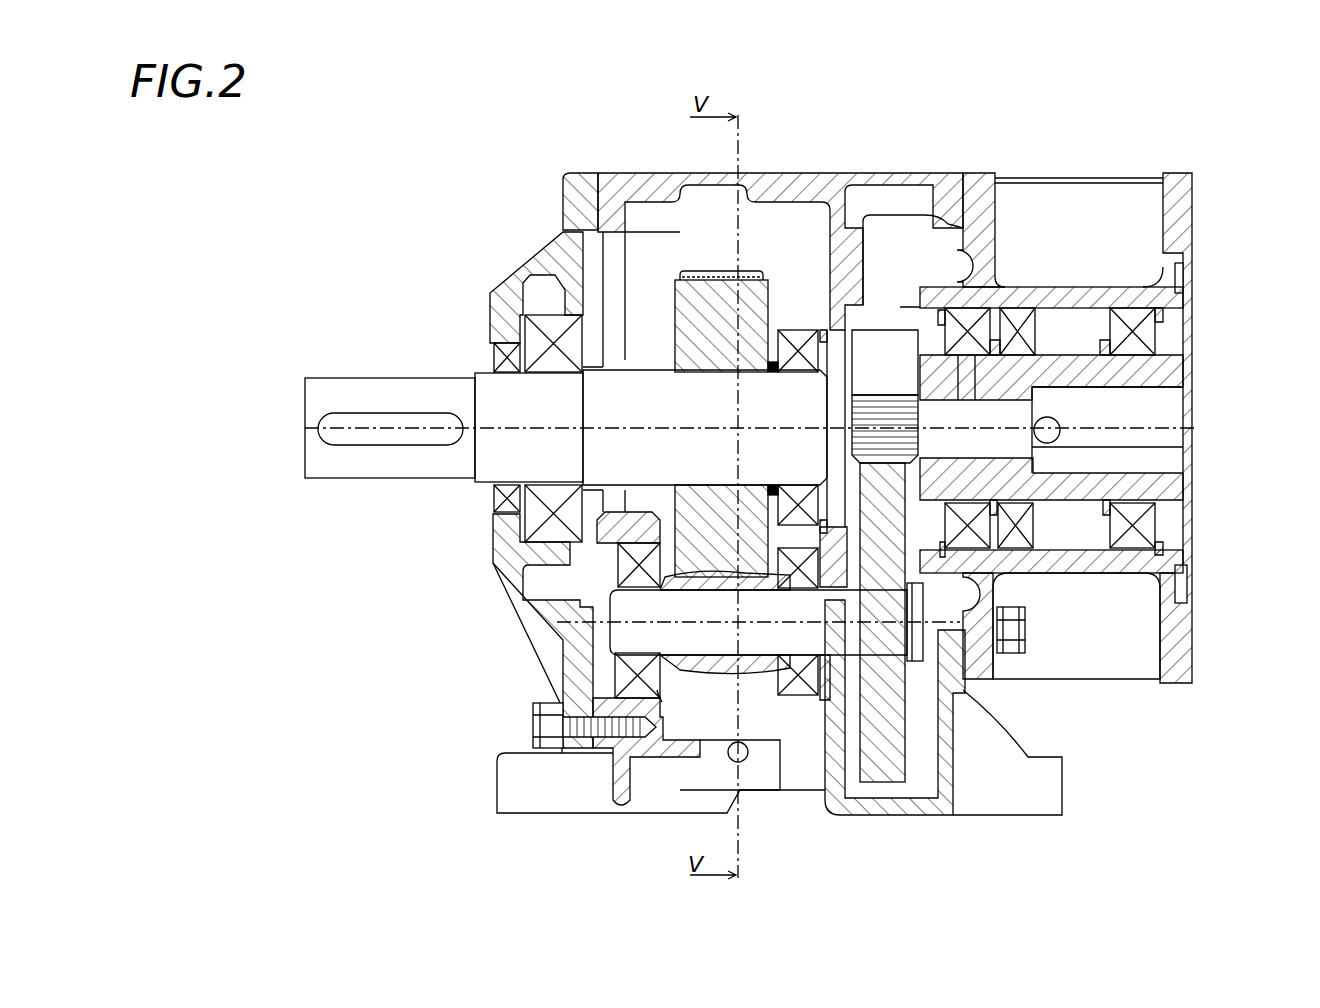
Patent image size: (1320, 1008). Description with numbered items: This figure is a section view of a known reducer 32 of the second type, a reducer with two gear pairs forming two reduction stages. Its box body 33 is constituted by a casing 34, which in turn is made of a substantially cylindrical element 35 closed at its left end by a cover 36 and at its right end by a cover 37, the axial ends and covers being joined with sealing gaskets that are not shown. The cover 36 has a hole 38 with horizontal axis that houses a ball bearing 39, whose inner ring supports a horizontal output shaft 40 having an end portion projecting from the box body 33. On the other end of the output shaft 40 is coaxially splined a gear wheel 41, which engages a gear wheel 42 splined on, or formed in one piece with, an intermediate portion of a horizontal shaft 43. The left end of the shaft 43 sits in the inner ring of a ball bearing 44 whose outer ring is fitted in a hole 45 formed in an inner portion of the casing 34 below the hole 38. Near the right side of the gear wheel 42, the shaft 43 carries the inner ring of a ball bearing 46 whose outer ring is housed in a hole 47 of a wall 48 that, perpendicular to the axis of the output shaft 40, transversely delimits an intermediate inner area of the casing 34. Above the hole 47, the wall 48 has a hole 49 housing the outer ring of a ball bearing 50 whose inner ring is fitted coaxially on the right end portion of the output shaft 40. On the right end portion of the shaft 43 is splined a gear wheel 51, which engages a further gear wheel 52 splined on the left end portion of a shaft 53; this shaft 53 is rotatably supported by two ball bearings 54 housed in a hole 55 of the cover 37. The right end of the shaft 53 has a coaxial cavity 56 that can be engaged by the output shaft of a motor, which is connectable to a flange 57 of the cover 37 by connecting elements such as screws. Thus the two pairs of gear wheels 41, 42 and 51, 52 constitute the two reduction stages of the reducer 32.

The reducer 32 is at (1093, 165).
The box body 33 is at (692, 150).
The casing 34 is at (603, 160).
The substantially cylindrical element 35 is at (660, 186).
The cover 36 is at (540, 258).
The cover 37 is at (1008, 215).
The hole 38 is at (538, 534).
The ball bearing 39 is at (533, 342).
The output shaft 40 is at (356, 392).
The gear wheel 41 is at (752, 285).
The gear wheel 42 is at (657, 665).
The shaft 43 is at (975, 700).
The ball bearing 44 is at (612, 805).
The hole 45 is at (665, 673).
The ball bearing 46 is at (785, 697).
The hole 47 is at (818, 697).
The wall 48 is at (836, 300).
The hole 49 is at (800, 330).
The ball bearing 50 is at (882, 398).
The gear wheel 51 is at (893, 635).
The gear wheel 52 is at (866, 300).
The shaft 53 is at (1170, 372).
The ball bearings 54 is at (1150, 527).
The hole 55 is at (1175, 316).
The cavity 56 is at (1178, 474).
The flange 57 is at (1178, 195).